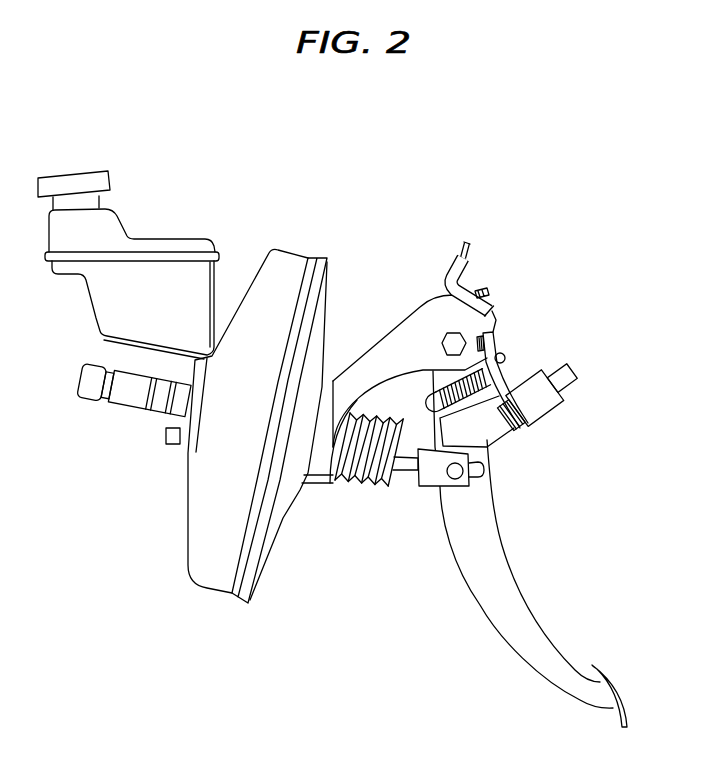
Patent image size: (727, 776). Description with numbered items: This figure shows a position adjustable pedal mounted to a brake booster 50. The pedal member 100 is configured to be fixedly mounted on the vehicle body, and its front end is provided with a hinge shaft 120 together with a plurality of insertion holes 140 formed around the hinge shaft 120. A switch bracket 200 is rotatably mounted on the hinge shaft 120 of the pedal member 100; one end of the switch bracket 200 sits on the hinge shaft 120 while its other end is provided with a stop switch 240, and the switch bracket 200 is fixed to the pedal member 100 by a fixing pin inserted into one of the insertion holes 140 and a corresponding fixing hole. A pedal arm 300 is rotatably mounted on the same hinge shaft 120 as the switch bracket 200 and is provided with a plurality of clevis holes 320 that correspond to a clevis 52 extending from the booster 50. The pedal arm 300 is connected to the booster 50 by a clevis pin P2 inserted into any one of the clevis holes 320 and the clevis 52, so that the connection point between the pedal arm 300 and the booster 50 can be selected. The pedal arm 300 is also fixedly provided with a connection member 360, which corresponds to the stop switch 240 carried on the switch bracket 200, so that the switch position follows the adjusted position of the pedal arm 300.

The booster 50 is at (210, 508).
The clevis 52 is at (427, 475).
The pedal member 100 is at (388, 358).
The hinge shaft 120 is at (488, 305).
The insertion holes 140 is at (492, 340).
The switch bracket 200 is at (505, 370).
The stop switch 240 is at (548, 390).
The pedal arm 300 is at (470, 558).
The clevis holes 320 is at (483, 470).
The connection member 360 is at (497, 435).
The clevis pin P2 is at (460, 479).